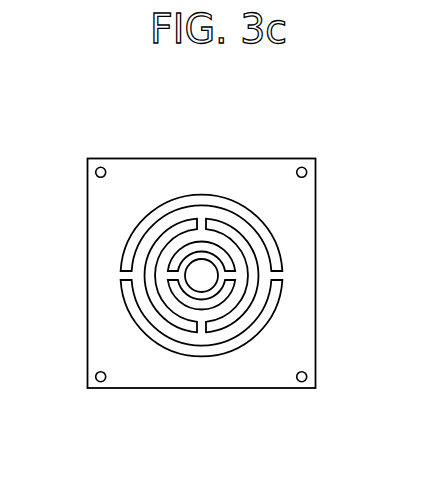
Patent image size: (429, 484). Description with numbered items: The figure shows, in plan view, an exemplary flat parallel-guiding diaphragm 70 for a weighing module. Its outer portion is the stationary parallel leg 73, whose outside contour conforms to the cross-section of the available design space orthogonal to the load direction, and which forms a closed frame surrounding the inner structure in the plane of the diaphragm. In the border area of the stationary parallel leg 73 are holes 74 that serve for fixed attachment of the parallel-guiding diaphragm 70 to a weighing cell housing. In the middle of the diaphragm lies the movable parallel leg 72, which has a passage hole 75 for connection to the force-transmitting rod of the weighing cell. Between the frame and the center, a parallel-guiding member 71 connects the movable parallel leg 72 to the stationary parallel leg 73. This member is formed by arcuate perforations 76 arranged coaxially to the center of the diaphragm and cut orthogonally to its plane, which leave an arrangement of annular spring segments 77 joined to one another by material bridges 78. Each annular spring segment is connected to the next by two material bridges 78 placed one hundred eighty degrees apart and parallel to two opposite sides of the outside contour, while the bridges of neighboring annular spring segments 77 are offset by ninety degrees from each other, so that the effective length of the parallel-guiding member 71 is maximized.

The parallel-guiding diaphragm 70 is at (133, 152).
The parallel-guiding member 71 is at (253, 237).
The movable parallel leg 72 is at (221, 287).
The stationary parallel leg 73 is at (292, 326).
The holes 74 is at (305, 172).
The passage hole 75 is at (202, 276).
The arcuate perforations 76 is at (242, 212).
The annular spring segments 77 is at (170, 218).
The material bridges 78 is at (202, 220).